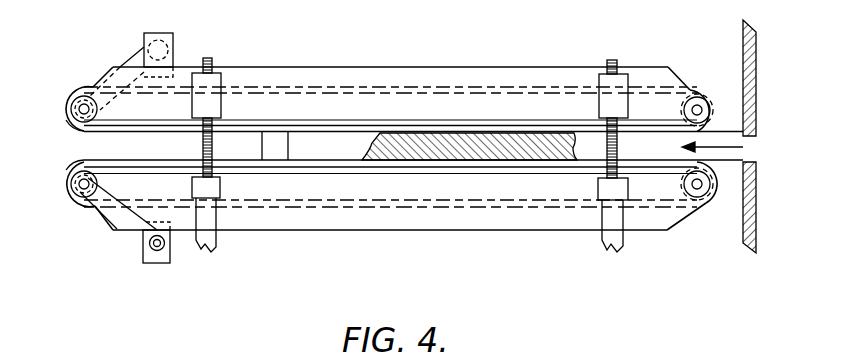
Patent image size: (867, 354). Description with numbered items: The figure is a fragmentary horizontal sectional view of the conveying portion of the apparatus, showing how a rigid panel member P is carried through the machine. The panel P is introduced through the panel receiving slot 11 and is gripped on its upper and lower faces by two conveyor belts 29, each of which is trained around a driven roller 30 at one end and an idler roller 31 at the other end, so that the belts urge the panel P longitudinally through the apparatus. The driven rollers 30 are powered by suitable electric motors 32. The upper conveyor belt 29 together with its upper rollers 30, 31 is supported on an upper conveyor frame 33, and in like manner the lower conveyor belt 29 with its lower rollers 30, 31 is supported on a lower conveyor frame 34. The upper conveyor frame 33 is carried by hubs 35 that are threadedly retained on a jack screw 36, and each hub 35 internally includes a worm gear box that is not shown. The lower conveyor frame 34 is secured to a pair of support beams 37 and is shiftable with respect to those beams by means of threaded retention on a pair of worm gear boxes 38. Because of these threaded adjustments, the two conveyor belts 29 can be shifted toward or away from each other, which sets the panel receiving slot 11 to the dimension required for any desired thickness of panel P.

The panel receiving slot 11 is at (755, 161).
The conveyor belt 29 is at (80, 128).
The driven roller 30 is at (75, 100).
The idler roller 31 is at (710, 100).
The electric motor 32 is at (173, 36).
The upper conveyor frame 33 is at (513, 67).
The lower conveyor frame 34 is at (296, 230).
The hub 35 is at (222, 80).
The jack screw 36 is at (209, 59).
The support beam 37 is at (217, 243).
The worm gear box 38 is at (220, 186).
The panel member P is at (492, 135).